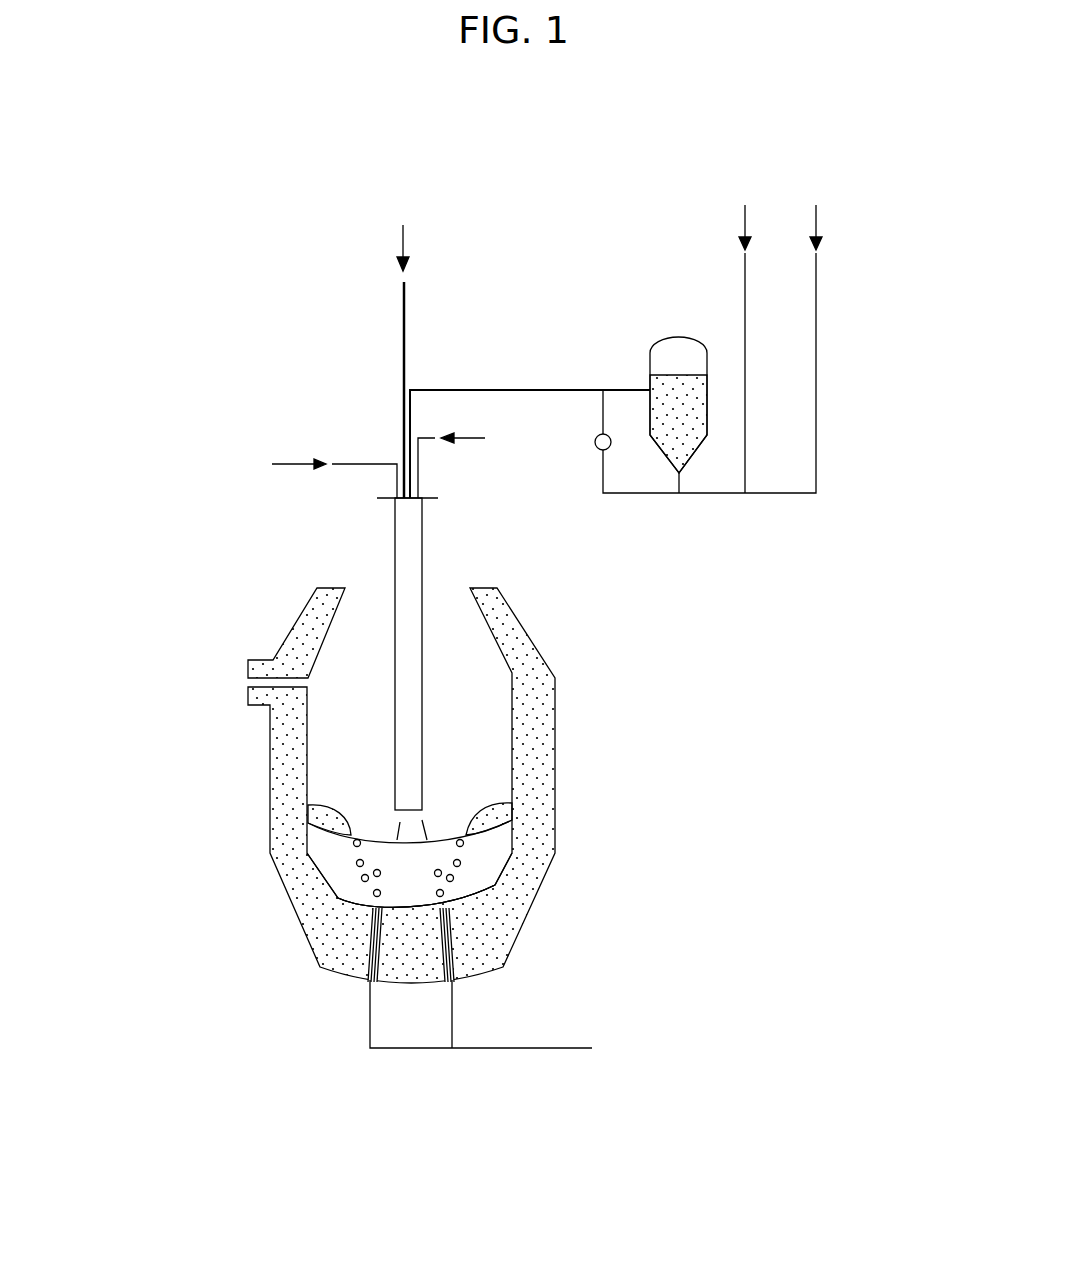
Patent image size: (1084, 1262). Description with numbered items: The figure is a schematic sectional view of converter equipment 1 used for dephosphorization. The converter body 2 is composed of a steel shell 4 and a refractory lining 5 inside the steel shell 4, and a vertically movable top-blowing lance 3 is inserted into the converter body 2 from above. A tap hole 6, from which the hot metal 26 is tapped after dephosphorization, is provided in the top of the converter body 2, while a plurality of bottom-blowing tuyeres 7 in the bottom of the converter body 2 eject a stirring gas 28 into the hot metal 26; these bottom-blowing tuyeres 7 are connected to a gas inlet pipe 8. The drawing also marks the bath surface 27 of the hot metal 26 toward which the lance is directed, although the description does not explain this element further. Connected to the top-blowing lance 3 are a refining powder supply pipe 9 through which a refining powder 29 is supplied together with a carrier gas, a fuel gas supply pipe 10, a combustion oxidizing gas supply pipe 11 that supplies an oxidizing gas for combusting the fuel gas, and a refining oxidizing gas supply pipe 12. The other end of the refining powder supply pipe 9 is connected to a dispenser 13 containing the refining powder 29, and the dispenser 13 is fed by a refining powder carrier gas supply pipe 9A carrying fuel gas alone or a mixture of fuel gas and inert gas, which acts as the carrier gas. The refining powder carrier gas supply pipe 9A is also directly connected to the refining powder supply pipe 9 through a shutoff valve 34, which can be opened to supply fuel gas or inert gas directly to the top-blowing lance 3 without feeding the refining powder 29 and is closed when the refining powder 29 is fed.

The converter equipment 1 is at (285, 402).
The converter body 2 is at (577, 748).
The top-blowing lance 3 is at (423, 537).
The steel shell 4 is at (555, 825).
The refractory lining 5 is at (510, 918).
The tap hole 6 is at (250, 688).
The bottom-blowing tuyeres 7 is at (373, 958).
The gas inlet pipe 8 is at (497, 1049).
The refining powder supply pipe 9 is at (495, 388).
The refining powder carrier gas supply pipe 9A is at (715, 493).
The fuel gas supply pipe 10 is at (418, 468).
The combustion oxidizing gas supply pipe 11 is at (401, 316).
The refining oxidizing gas supply pipe 12 is at (362, 462).
The dispenser 13 is at (679, 336).
The hot metal 26 is at (338, 862).
The molten bath surface 27 is at (308, 805).
The stirring gas 28 is at (461, 864).
The refining powder 29 is at (686, 446).
The shutoff valve 34 is at (611, 446).